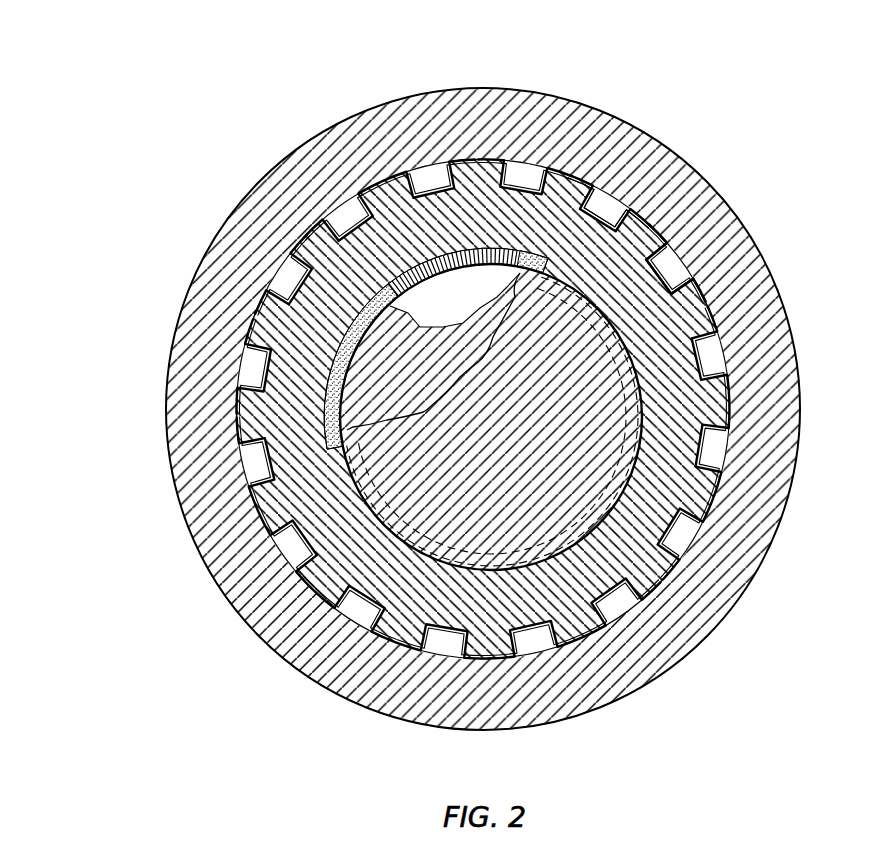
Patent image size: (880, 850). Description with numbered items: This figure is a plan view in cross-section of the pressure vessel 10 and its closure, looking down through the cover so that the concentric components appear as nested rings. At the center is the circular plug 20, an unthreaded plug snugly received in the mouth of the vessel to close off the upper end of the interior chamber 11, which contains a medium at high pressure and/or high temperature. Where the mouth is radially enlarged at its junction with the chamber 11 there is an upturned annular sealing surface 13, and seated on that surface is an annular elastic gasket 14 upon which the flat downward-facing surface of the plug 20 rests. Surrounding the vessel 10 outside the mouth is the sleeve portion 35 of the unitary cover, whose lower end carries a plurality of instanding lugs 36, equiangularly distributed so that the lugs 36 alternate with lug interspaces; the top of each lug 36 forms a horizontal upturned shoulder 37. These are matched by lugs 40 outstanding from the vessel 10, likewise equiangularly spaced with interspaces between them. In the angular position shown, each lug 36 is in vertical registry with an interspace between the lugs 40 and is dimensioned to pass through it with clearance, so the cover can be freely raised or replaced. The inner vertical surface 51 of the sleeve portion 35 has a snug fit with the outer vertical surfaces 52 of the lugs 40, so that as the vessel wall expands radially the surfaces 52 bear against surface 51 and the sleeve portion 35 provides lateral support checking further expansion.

The pressure vessel 10 is at (452, 357).
The interior chamber 11 is at (462, 316).
The annular sealing surface 13 is at (488, 262).
The annular elastic gasket 14 is at (392, 308).
The circular plug 20 is at (495, 419).
The sleeve portion 35 is at (528, 100).
The instanding lugs 36 is at (423, 173).
The upturned shoulder 37 is at (517, 163).
The lugs 40 is at (383, 183).
The inner vertical surface 51 is at (607, 205).
The outer vertical surfaces 52 is at (657, 224).